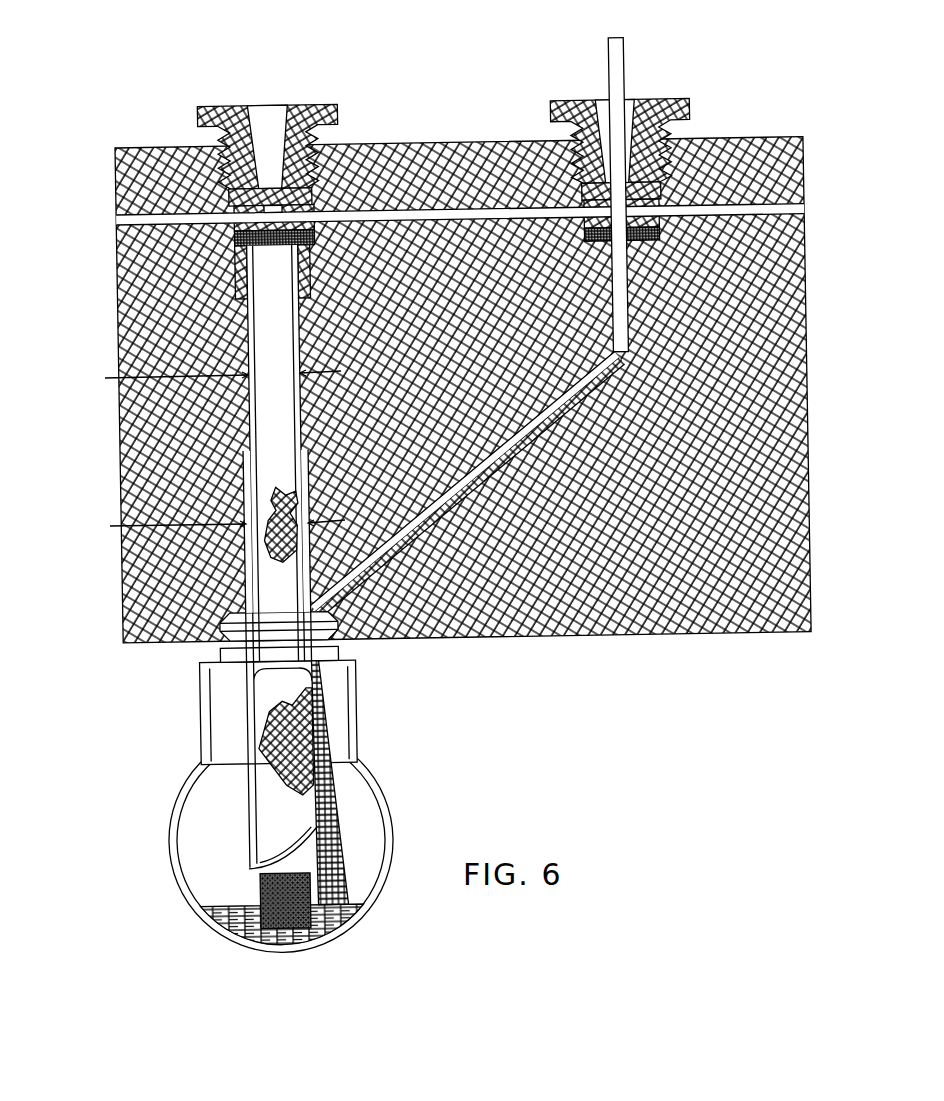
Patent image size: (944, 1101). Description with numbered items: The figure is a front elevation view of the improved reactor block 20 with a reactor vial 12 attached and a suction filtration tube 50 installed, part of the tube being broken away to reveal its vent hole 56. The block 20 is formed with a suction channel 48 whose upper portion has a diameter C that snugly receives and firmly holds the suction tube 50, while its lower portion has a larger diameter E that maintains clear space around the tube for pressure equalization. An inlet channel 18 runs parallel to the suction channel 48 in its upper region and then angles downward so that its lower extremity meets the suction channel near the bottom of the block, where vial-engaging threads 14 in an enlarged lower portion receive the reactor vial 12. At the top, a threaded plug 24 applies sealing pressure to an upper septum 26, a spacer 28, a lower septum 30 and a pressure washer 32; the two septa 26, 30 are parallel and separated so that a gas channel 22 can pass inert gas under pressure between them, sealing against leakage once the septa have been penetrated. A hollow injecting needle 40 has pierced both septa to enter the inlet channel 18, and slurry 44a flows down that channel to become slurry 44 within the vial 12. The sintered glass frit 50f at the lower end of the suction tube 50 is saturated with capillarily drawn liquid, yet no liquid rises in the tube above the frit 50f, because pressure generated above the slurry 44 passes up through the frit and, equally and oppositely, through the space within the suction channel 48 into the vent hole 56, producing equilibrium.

The reactor vial 12 is at (357, 800).
The vial-engaging threads 14 is at (350, 628).
The inlet channel 18 is at (375, 545).
The reactor block 20 is at (115, 550).
The gas channel 22 is at (790, 201).
The plug 24 is at (223, 100).
The upper septum 26 is at (221, 185).
The spacer 28 is at (224, 206).
The lower septum 30 is at (226, 236).
The pressure washer 32 is at (226, 252).
The hollow injecting needle 40 is at (617, 77).
The slurry 44 is at (327, 910).
The slurry 44a is at (467, 473).
The suction channel 48 is at (240, 392).
The suction filtration tube 50 is at (240, 418).
The sintered glass frit 50f is at (250, 877).
The vent hole 56 is at (290, 497).
The diameter of upper portion of suction channel C is at (105, 366).
The diameter of lower portion of suction channel E is at (108, 517).